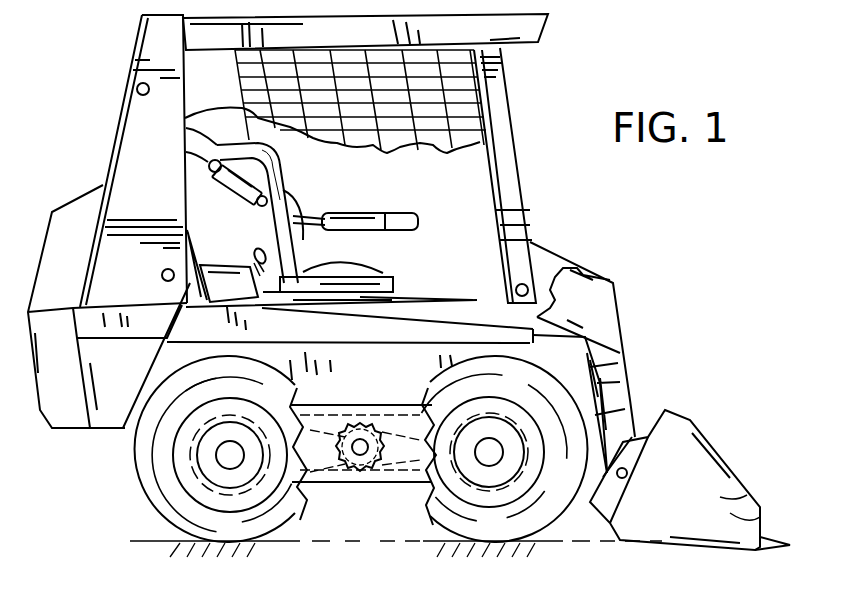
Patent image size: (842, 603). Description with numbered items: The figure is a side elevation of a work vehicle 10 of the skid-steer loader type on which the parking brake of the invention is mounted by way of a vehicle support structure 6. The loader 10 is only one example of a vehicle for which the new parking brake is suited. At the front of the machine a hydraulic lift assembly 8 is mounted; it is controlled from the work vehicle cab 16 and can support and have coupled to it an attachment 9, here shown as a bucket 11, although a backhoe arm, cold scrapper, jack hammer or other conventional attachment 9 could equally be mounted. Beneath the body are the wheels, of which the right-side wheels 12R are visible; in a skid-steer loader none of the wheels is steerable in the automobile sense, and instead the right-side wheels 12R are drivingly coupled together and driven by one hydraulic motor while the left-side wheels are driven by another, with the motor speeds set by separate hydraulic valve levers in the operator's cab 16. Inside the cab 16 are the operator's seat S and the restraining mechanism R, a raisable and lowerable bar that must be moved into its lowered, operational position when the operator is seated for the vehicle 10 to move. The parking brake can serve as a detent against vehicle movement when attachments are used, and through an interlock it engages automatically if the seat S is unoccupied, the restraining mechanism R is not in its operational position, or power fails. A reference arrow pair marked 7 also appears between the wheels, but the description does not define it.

The work vehicle 10 is at (567, 53).
The work vehicle cab 16 is at (462, 190).
The restraining mechanism R is at (420, 220).
The operator's seat S is at (395, 282).
The vehicle support structure 6 is at (167, 360).
The drive train 7 is at (274, 402).
The right-side wheels 12R is at (213, 522).
The hydraulic lift assembly 8 is at (615, 298).
The attachment 9 is at (715, 443).
The bucket 11 is at (760, 517).